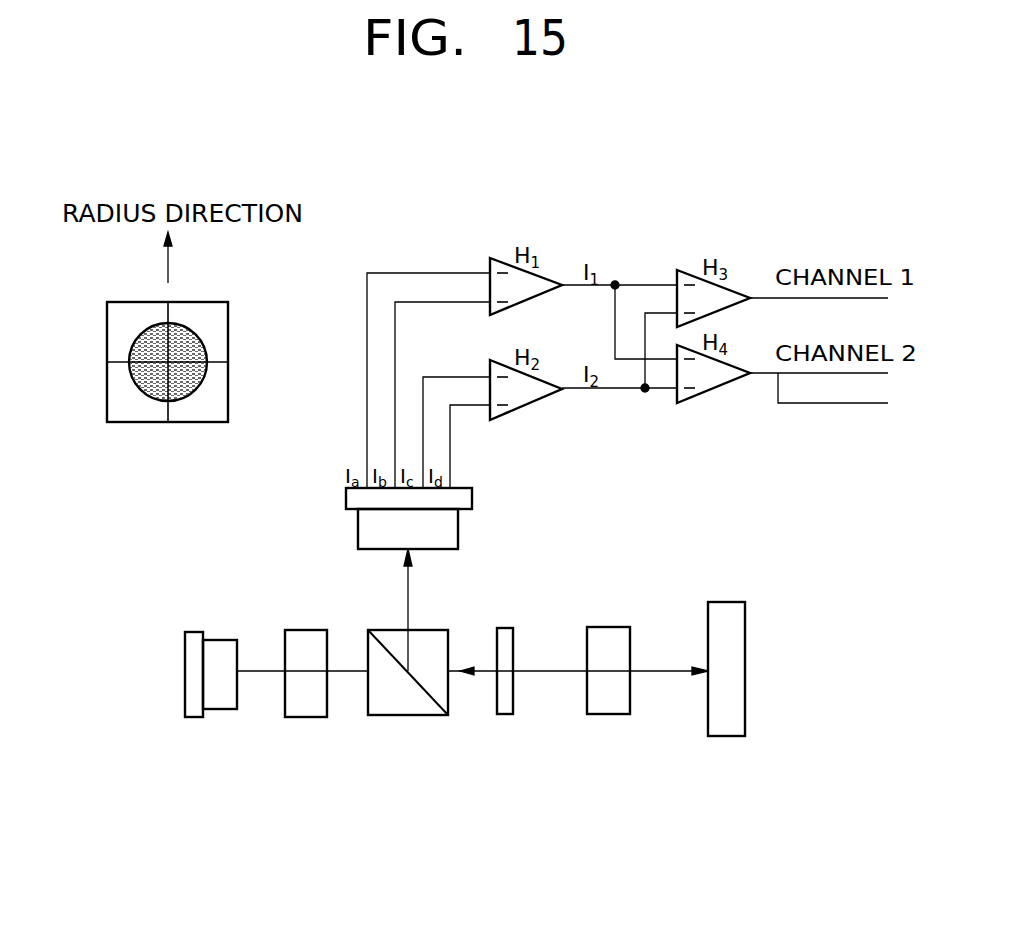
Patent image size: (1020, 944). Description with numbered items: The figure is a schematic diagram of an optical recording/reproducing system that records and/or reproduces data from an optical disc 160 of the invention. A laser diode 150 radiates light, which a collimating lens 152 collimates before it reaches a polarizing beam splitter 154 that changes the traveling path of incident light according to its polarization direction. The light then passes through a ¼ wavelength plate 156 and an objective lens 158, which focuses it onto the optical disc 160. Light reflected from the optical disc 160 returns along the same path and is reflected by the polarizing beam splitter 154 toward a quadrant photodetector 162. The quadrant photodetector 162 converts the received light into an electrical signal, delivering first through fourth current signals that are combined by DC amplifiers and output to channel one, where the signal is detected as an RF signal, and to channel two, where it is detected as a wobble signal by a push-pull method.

The laser diode 150 is at (221, 709).
The collimating lens 152 is at (307, 717).
The polarizing beam splitter 154 is at (411, 715).
The ¼ wavelength plate 156 is at (505, 714).
The objective lens 158 is at (610, 714).
The optical disc 160 is at (728, 736).
The quadrant photodetector 162 is at (97, 365).